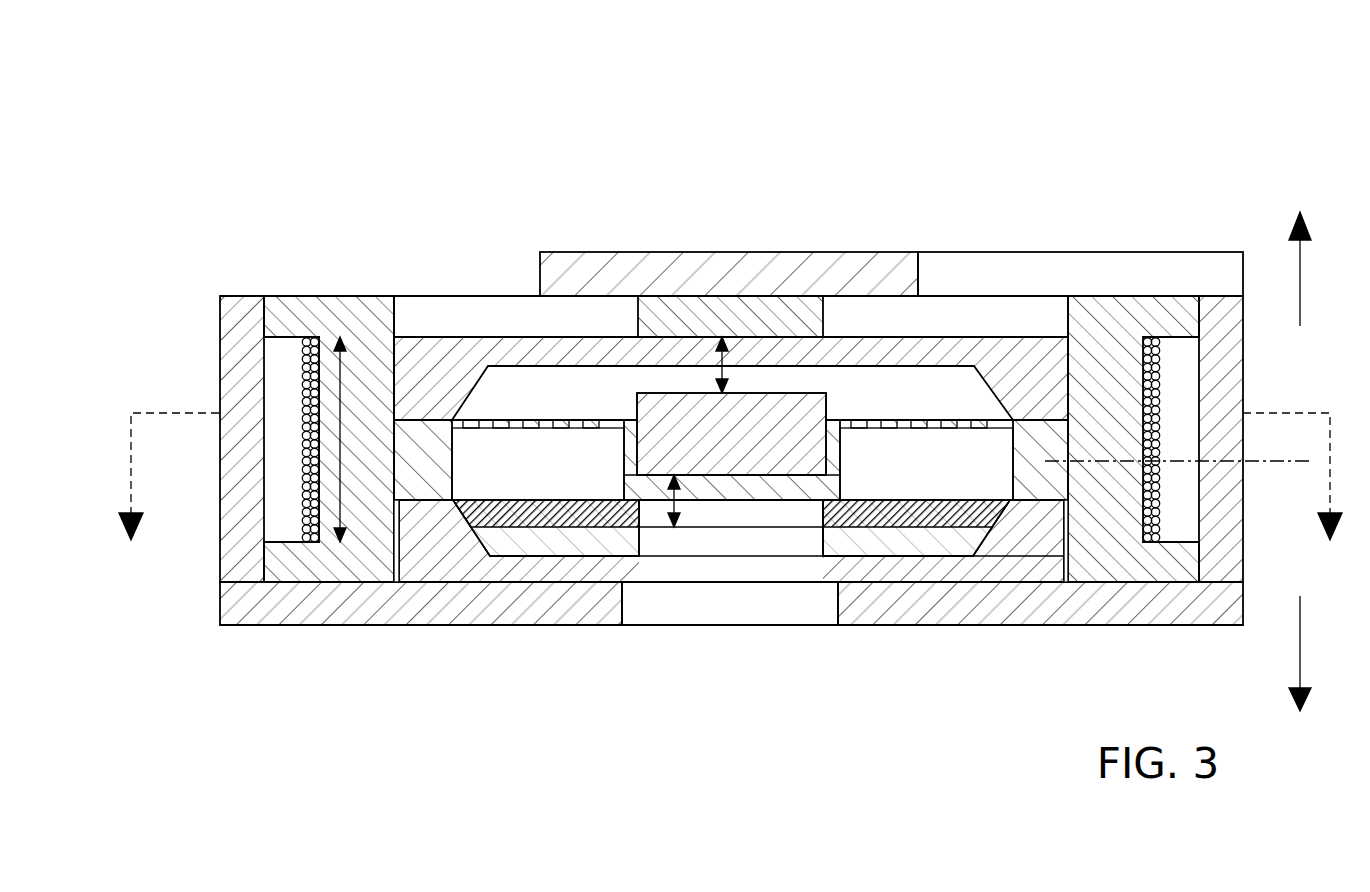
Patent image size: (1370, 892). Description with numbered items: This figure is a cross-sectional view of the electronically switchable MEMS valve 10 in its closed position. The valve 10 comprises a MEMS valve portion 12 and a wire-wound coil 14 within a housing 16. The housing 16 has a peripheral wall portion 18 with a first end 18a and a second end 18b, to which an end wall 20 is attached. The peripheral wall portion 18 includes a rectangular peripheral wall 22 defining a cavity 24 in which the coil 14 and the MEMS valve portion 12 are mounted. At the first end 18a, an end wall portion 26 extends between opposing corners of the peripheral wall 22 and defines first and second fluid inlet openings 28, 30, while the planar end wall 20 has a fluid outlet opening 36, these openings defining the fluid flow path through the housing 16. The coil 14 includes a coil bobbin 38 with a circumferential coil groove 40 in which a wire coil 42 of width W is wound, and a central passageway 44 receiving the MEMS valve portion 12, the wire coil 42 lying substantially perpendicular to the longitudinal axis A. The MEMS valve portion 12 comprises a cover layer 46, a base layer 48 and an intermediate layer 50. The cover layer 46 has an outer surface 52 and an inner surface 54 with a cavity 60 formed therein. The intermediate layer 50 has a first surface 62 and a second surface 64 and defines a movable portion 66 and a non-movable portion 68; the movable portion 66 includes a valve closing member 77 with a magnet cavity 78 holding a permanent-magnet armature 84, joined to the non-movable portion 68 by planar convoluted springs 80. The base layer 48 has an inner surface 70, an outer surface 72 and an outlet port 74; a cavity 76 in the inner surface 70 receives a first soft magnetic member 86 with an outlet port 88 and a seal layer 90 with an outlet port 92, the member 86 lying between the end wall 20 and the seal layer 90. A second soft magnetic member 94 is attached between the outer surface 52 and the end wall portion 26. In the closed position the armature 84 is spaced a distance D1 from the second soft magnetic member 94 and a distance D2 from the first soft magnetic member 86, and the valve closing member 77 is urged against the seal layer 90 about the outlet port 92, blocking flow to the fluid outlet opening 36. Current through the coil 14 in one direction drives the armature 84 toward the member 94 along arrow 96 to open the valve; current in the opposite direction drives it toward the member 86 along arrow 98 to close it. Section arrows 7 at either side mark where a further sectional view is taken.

The electronically switchable MEMS valve 10 is at (134, 158).
The MEMS valve portion 12 is at (410, 326).
The wire-wound coil 14 is at (321, 282).
The housing 16 is at (189, 271).
The peripheral wall portion 18 is at (206, 338).
The first end 18a is at (487, 297).
The second end 18b is at (246, 585).
The end wall 20 is at (1196, 548).
The peripheral wall 22 is at (1238, 375).
The cavity 24 is at (1150, 603).
The end wall portion 26 is at (793, 260).
The first fluid inlet opening 28 is at (520, 320).
The second fluid inlet opening 30 is at (937, 317).
The fluid outlet opening 36 is at (622, 603).
The coil bobbin 38 is at (367, 313).
The coil groove 40 is at (277, 541).
The wire coil 42 is at (303, 500).
The passageway 44 is at (395, 375).
The cover layer 46 is at (1000, 350).
The base layer 48 is at (985, 560).
The intermediate layer 50 is at (1050, 445).
The outer surface 52 is at (967, 337).
The inner surface 54 is at (410, 423).
The cavity 60 is at (871, 360).
The first surface 62 is at (1043, 415).
The second surface 64 is at (1033, 505).
The movable portion 66 is at (574, 406).
The non-movable portion 68 is at (408, 493).
The inner surface 70 is at (430, 507).
The outer surface 72 is at (567, 583).
The outlet port 74 is at (828, 548).
The cavity 76 is at (522, 530).
The valve closing member 77 is at (776, 487).
The magnet cavity 78 is at (792, 412).
The convoluted springs 80 is at (546, 430).
The armature 84 is at (825, 448).
The first soft magnetic member 86 is at (897, 542).
The outlet port 88 is at (838, 698).
The seal layer 90 is at (923, 525).
The outlet port 92 is at (818, 543).
The second soft magnetic member 94 is at (678, 312).
The arrow 96 is at (1302, 284).
The arrow 98 is at (1302, 652).
The width W is at (342, 393).
The distance D1 is at (722, 337).
The distance D2 is at (677, 527).
The longitudinal axis A is at (1265, 466).
The section line 7 is at (730, 498).